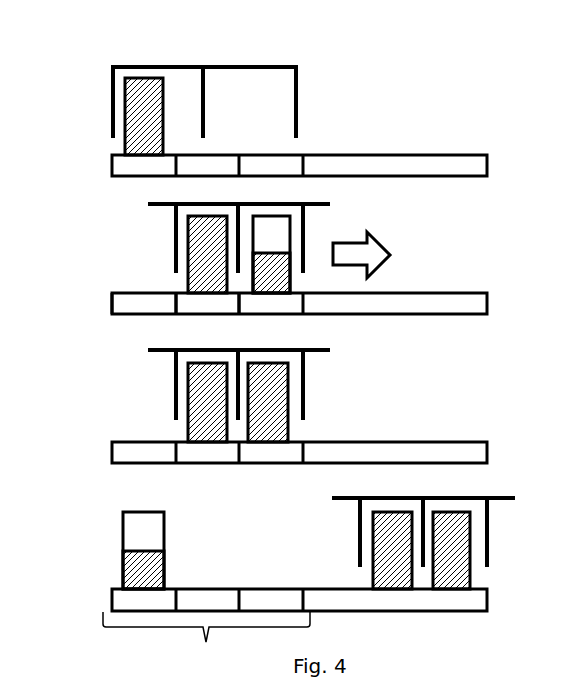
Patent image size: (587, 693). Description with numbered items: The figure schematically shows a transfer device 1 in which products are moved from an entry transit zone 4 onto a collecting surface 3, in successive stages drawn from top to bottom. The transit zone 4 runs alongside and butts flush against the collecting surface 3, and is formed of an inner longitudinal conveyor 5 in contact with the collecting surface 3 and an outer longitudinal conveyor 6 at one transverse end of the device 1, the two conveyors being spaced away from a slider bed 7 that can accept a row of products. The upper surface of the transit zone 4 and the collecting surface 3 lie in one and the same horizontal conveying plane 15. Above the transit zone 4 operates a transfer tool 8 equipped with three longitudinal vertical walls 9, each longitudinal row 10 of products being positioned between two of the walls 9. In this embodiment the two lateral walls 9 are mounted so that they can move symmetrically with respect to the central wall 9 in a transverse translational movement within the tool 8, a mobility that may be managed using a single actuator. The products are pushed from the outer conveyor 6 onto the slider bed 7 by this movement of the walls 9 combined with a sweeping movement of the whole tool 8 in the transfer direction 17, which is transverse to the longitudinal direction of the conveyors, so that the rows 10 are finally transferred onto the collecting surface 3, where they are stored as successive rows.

The transfer device 1 is at (451, 71).
The collecting surface 3 is at (466, 283).
The entry transit zone 4 is at (295, 595).
The inner longitudinal conveyor 5 is at (277, 313).
The outer longitudinal conveyor 6 is at (134, 309).
The slider bed 7 is at (190, 307).
The transfer tool 8 is at (473, 492).
The longitudinal vertical wall 9 is at (102, 82).
The longitudinal row of products 10 is at (461, 560).
The conveying plane 15 is at (422, 430).
The transfer direction 17 is at (399, 237).